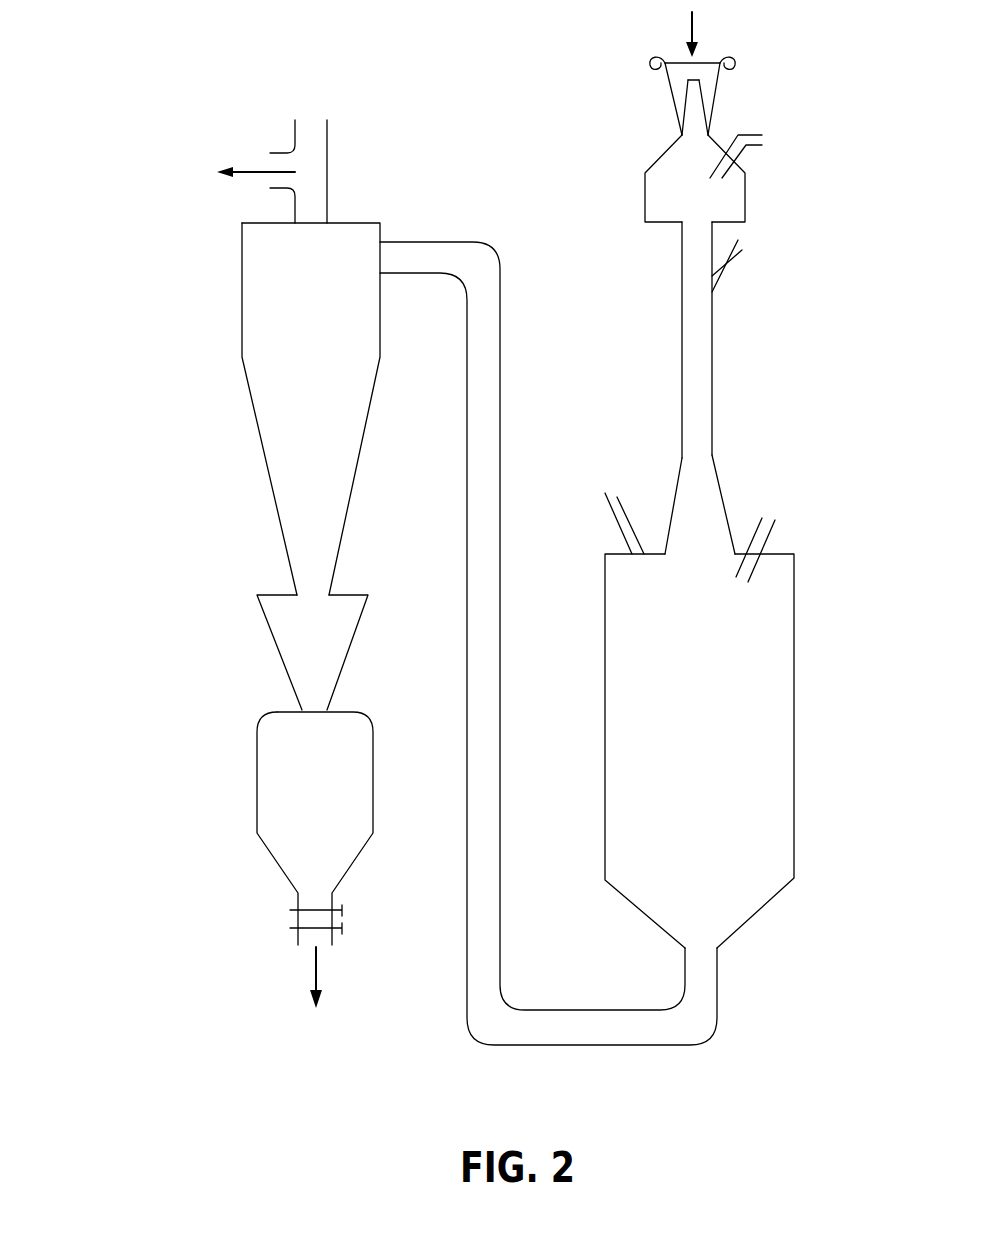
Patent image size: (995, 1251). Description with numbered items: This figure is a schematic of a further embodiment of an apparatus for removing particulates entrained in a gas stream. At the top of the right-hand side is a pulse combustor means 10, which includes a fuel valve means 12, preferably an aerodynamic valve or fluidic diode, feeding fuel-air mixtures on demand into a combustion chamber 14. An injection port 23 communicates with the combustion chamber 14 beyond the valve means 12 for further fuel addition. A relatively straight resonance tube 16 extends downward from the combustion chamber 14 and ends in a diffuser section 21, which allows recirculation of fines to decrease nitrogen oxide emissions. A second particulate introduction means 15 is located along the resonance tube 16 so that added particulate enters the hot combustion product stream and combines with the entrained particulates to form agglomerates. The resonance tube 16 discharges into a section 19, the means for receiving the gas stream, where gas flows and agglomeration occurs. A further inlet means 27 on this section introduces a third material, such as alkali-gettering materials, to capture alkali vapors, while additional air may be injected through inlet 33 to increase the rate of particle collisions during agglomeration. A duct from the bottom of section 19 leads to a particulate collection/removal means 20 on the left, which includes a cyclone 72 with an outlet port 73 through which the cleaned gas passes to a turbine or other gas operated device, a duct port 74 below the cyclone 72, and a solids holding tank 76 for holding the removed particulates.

The pulse combustor means 10 is at (862, 423).
The fuel valve means 12 is at (672, 98).
The combustion chamber 14 is at (645, 192).
The second particulate introduction means 15 is at (728, 268).
The resonance tube 16 is at (682, 357).
The means for receiving a gas stream 19 is at (794, 702).
The particulate collection/removal means 20 is at (165, 507).
The diffuser section 21 is at (672, 503).
The injection port 23 is at (752, 135).
The further inlet means 27 is at (766, 540).
The inlet 33 is at (618, 525).
The cyclone 72 is at (322, 376).
The outlet port 73 is at (327, 170).
The duct port 74 is at (330, 648).
The solids holding tank 76 is at (326, 807).